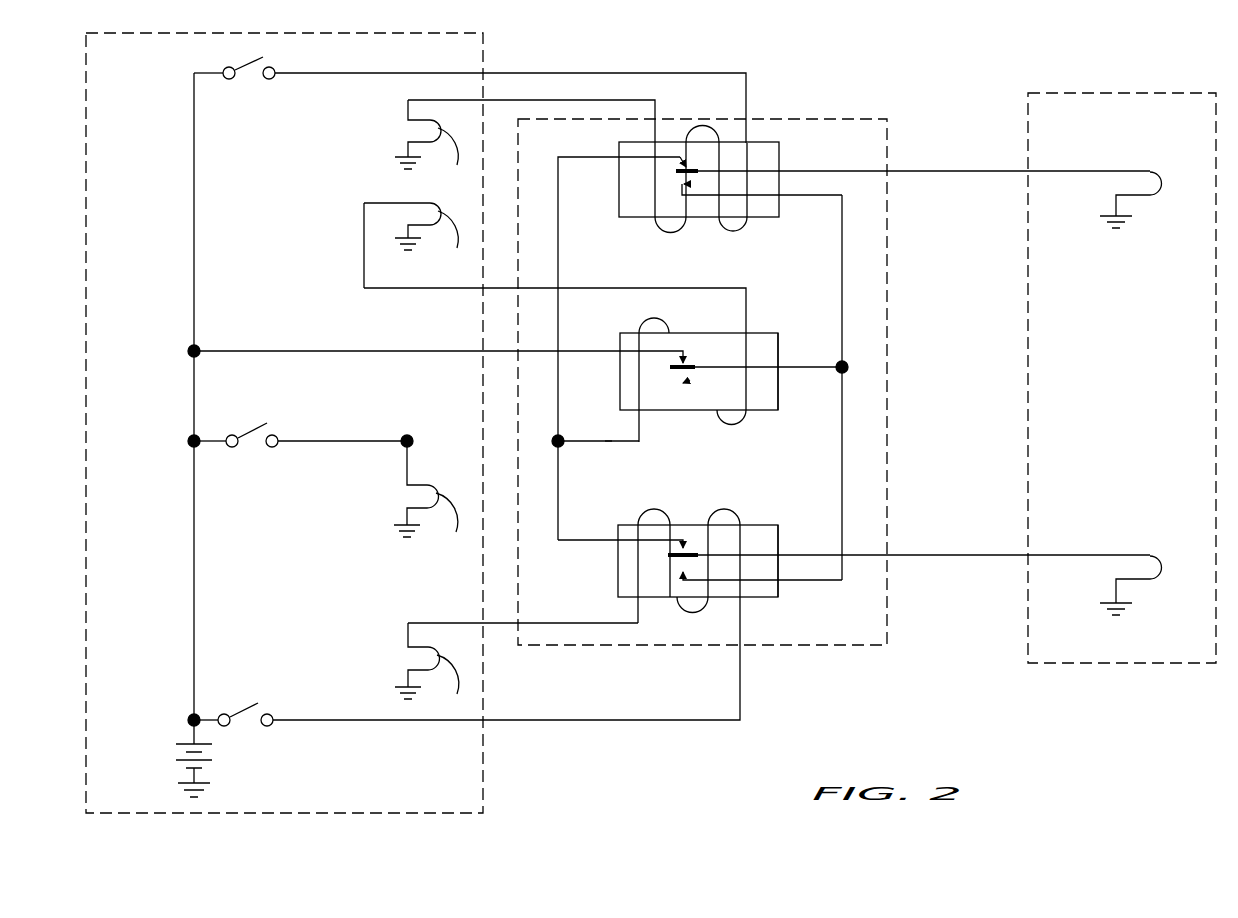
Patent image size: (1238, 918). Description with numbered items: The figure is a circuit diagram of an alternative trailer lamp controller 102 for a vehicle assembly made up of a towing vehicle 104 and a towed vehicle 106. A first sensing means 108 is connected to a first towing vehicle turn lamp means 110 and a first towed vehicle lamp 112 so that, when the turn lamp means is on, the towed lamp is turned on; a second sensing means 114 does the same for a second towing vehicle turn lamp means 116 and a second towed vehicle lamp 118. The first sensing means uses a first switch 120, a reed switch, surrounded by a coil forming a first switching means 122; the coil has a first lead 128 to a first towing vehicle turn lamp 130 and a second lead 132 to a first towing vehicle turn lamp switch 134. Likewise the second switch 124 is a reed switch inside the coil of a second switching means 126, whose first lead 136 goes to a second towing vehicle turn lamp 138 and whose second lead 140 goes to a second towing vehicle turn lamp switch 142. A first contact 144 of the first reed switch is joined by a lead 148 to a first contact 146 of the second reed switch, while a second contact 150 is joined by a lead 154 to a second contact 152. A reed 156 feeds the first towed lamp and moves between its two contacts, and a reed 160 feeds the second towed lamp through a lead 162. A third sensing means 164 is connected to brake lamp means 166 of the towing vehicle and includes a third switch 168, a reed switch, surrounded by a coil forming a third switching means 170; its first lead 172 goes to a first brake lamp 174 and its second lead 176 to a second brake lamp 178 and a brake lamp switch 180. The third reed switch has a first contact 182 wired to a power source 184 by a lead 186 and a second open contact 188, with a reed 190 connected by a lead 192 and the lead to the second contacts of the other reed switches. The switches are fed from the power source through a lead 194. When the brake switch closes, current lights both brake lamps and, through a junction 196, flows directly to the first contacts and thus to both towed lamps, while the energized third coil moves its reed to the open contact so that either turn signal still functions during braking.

The trailer lamp controller 102 is at (815, 118).
The towing vehicle 104 is at (484, 56).
The towed vehicle 106 is at (1097, 93).
The first sensing means 108 is at (810, 158).
The first towing vehicle turn lamp means 110 is at (322, 93).
The first towed vehicle lamp 112 is at (1158, 165).
The second sensing means 114 is at (772, 598).
The second towing vehicle turn lamp means 116 is at (322, 668).
The second towed vehicle lamp 118 is at (1147, 545).
The first switch 120 is at (619, 148).
The first switching means 122 is at (738, 232).
The second switch 124 is at (768, 525).
The second switching means 126 is at (657, 508).
The first lead 128 is at (610, 100).
The first towing vehicle turn lamp 130 is at (428, 141).
The second lead 132 is at (620, 73).
The first towing vehicle turn lamp switch 134 is at (247, 60).
The first lead 136 is at (590, 623).
The second towing vehicle turn lamp 138 is at (428, 666).
The second lead 140 is at (588, 720).
The second towing vehicle turn lamp switch 142 is at (256, 697).
The first contact 144 is at (698, 168).
The first contact 146 is at (690, 535).
The lead 148 is at (558, 266).
The second contact 150 is at (692, 184).
The second contact 152 is at (682, 575).
The lead 154 is at (840, 318).
The reed 156 is at (775, 172).
The reed 160 is at (722, 556).
The lead 162 is at (962, 556).
The third sensing means 164 is at (626, 322).
The brake lamp means 166 is at (322, 292).
The third switch 168 is at (772, 410).
The third switching means 170 is at (667, 326).
The first lead 172 is at (402, 288).
The first brake lamp 174 is at (411, 234).
The second lead 176 is at (605, 442).
The second brake lamp 178 is at (427, 492).
The brake lamp switch 180 is at (250, 448).
The first contact 182 is at (690, 356).
The power source 184 is at (236, 752).
The lead 186 is at (362, 352).
The second open contact 188 is at (691, 381).
The reed 190 is at (770, 370).
The lead 192 is at (838, 362).
The lead 194 is at (194, 246).
The junction 196 is at (560, 440).